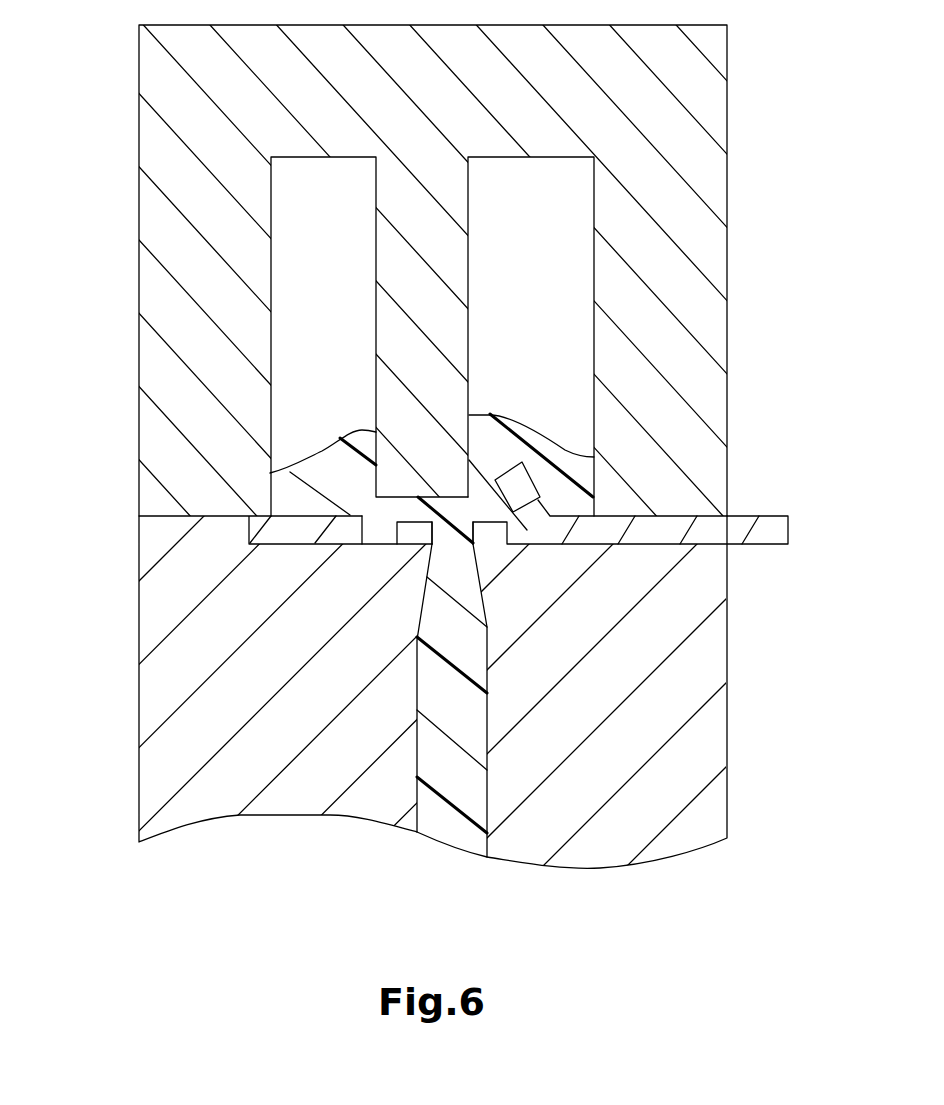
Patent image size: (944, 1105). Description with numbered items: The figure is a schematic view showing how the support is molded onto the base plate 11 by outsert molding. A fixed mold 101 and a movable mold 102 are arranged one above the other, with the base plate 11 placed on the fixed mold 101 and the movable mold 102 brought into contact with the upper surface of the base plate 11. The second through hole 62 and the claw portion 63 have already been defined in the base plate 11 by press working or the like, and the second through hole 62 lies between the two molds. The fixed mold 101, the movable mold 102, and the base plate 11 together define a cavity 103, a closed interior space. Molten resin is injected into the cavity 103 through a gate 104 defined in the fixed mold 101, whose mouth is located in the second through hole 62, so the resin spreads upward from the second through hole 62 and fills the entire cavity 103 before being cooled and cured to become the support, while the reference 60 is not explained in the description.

The fixed mold 101 is at (228, 693).
The movable mold 102 is at (230, 291).
The cavity 103 is at (543, 267).
The gate 104 is at (452, 533).
The flow passage 60 is at (657, 527).
The second through hole 62 is at (381, 521).
The claw portion 63 is at (518, 497).
The base plate 11 is at (794, 522).